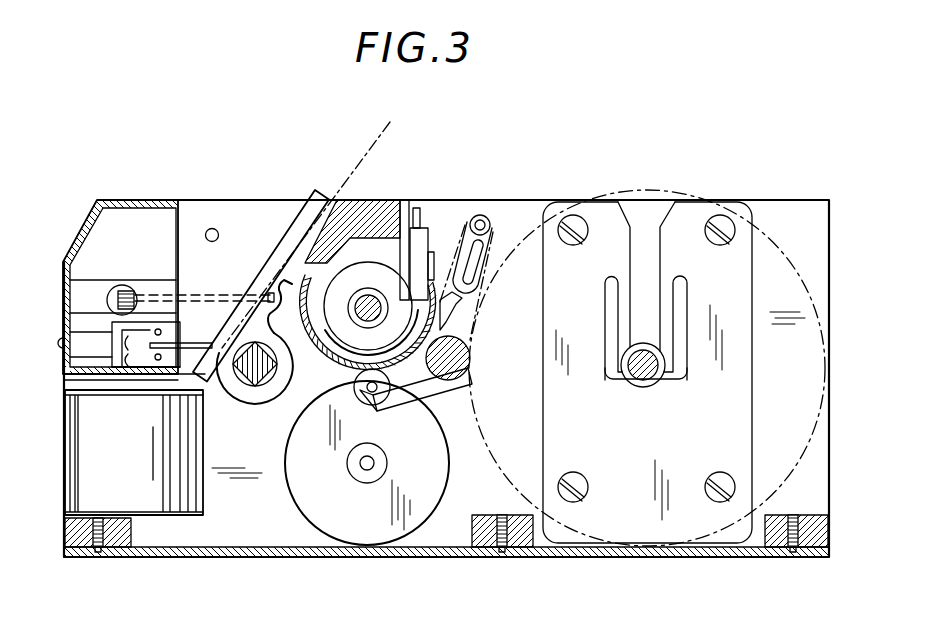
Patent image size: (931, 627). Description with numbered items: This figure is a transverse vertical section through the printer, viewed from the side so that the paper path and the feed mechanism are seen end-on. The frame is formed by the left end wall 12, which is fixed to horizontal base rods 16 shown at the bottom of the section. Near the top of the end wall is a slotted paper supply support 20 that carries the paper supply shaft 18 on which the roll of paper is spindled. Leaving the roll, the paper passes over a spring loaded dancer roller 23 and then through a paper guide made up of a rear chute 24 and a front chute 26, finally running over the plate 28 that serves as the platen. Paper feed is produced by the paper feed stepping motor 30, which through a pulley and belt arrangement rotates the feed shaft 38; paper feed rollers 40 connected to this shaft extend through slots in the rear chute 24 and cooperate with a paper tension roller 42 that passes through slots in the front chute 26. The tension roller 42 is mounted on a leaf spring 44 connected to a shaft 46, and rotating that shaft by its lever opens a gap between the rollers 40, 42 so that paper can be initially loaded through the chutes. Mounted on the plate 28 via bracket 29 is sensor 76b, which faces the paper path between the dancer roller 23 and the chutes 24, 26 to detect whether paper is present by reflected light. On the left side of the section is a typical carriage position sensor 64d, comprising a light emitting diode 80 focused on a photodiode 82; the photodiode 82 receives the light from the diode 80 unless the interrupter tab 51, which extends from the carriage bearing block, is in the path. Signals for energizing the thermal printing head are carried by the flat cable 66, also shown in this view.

The left end wall 12 is at (520, 208).
The horizontal base rods 16 is at (130, 535).
The paper supply shaft 18 is at (645, 383).
The slotted paper supply supports 20 is at (690, 217).
The spring loaded dancer roller 23 is at (482, 217).
The rear chute 24 is at (295, 297).
The front chute 26 is at (302, 265).
The plate 28 is at (355, 205).
The bracket 29 is at (407, 203).
The paper feed stepping motor 30 is at (312, 503).
The feed shaft 38 is at (368, 290).
The paper feed rollers 40 is at (357, 338).
The paper tension roller 42 is at (352, 406).
The leaf springs 44 is at (412, 395).
The shaft 46 is at (467, 355).
The interrupter tab 51 is at (213, 316).
The sensor 64d is at (127, 375).
The flat cable 66 is at (187, 455).
The sensor 76b is at (423, 238).
The light emitting diode 80 is at (160, 332).
The photodiode 82 is at (155, 373).